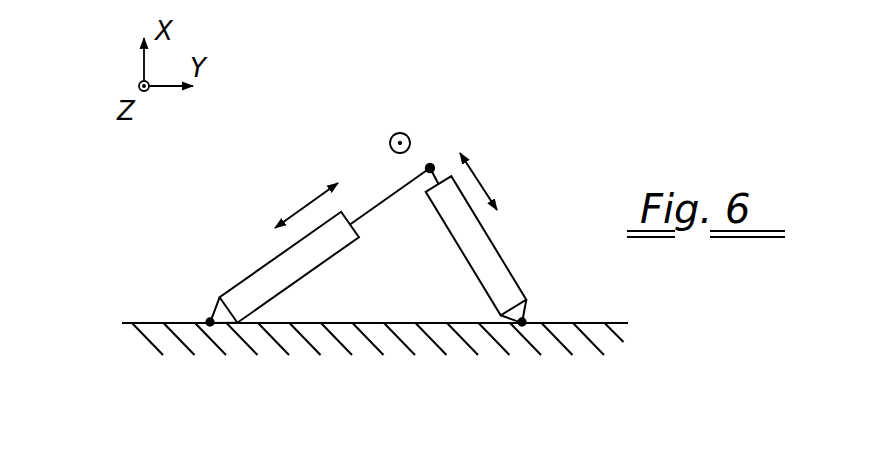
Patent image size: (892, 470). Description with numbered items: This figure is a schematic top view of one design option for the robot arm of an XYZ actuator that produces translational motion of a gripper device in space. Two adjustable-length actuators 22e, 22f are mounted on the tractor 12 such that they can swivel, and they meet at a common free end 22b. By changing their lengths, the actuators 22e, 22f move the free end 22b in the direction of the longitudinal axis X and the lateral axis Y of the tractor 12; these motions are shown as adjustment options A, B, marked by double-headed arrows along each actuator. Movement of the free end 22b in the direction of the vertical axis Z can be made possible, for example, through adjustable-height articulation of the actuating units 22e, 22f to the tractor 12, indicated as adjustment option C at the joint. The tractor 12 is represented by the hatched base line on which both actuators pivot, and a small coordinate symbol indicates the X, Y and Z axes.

The tractor 12 is at (367, 347).
The adjustable-length actuator 22e is at (268, 277).
The adjustable-length actuator 22f is at (495, 272).
The free end 22b is at (432, 162).
The adjustment option A is at (308, 203).
The adjustment option B is at (483, 177).
The adjustment option C is at (407, 136).